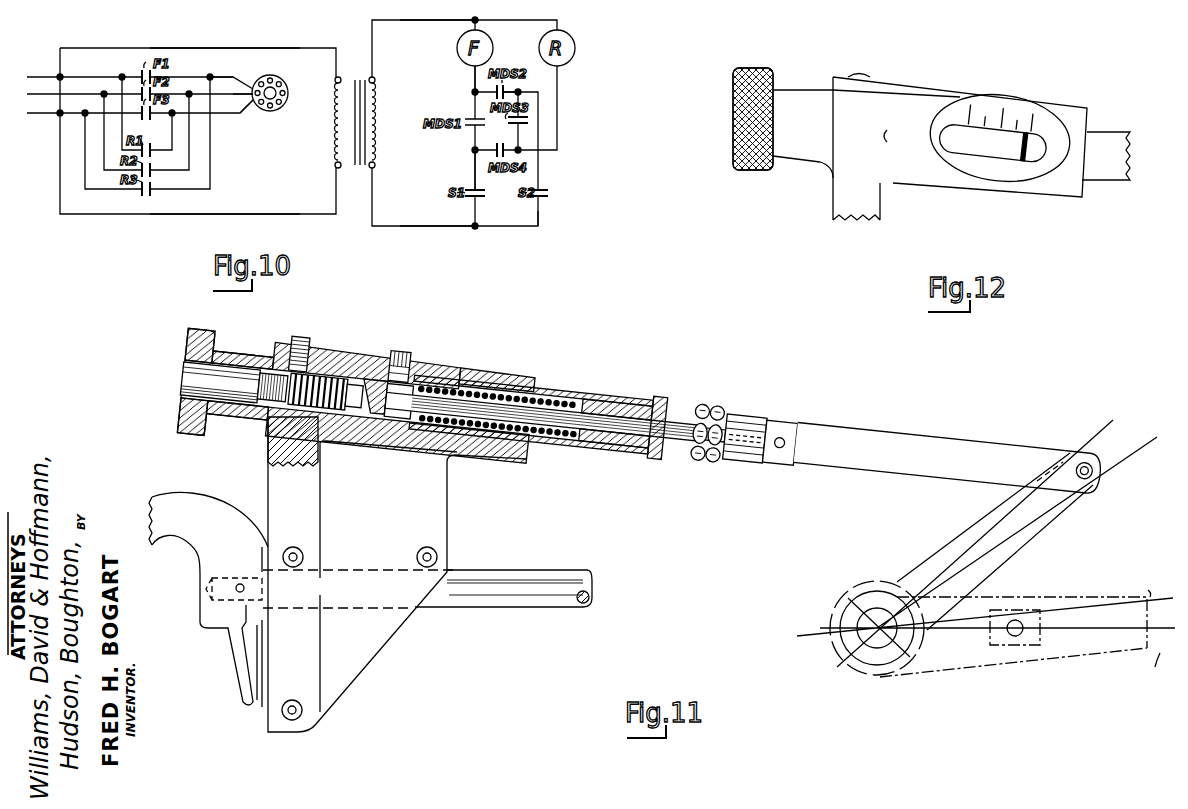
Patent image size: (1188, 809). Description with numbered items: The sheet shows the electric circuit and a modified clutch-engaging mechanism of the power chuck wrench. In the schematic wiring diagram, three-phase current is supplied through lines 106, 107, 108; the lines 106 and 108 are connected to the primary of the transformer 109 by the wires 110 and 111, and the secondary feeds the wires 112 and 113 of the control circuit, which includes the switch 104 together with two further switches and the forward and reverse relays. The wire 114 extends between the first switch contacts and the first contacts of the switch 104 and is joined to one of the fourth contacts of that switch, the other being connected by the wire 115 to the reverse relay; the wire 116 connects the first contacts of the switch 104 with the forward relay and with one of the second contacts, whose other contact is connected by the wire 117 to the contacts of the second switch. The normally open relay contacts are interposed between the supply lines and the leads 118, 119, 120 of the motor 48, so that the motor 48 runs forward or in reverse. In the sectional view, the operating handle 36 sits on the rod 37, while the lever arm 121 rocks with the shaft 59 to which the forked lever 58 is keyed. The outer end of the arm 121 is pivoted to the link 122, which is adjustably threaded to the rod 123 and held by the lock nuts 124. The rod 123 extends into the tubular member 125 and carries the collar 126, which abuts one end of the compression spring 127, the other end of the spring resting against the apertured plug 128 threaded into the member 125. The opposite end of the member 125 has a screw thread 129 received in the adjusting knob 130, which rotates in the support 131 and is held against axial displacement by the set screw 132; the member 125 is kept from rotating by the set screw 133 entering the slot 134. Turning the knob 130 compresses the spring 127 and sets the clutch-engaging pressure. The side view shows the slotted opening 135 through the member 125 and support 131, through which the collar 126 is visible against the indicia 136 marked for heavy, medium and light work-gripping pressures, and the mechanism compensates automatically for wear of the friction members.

In FIG. 10, the power supply line 106 is at (46, 77).
In FIG. 10, the power supply line 107 is at (51, 94).
In FIG. 10, the power supply line 108 is at (51, 114).
In FIG. 10, the wire 110 is at (318, 50).
In FIG. 10, the wire 111 is at (324, 215).
In FIG. 10, the motor lead 118 is at (230, 76).
In FIG. 10, the motor lead 119 is at (248, 95).
In FIG. 10, the motor lead 120 is at (228, 118).
In FIG. 10, the motor 48 is at (283, 117).
In FIG. 10, the transformer 109 is at (358, 70).
In FIG. 10, the control circuit wire 112 is at (447, 25).
In FIG. 10, the control circuit wire 113 is at (425, 220).
In FIG. 10, the wire 114 is at (472, 169).
In FIG. 10, the wire 115 is at (558, 109).
In FIG. 10, the wire 116 is at (471, 76).
In FIG. 10, the wire 117 is at (537, 90).
In FIG. 10, the switch 104 is at (469, 139).
In FIG. 12, the adjusting knob 130 is at (770, 68).
In FIG. 11, the adjusting knob 130 is at (242, 356).
In FIG. 11, the set screw 132 is at (297, 337).
In FIG. 11, the screw thread 129 is at (324, 358).
In FIG. 11, the set screw 133 is at (394, 350).
In FIG. 12, the collar or cylindrical flange 126 is at (1036, 156).
In FIG. 11, the collar or cylindrical flange 126 is at (436, 373).
In FIG. 11, the longitudinally extending slot or groove 134 is at (463, 378).
In FIG. 11, the compression spring 127 is at (543, 394).
In FIG. 11, the tubular member 125 is at (612, 396).
In FIG. 11, the apertured plug 128 is at (660, 405).
In FIG. 11, the lock nuts 124 is at (713, 403).
In FIG. 12, the rod or plunger member 123 is at (1109, 181).
In FIG. 11, the rod or plunger member 123 is at (656, 448).
In FIG. 11, the support 131 is at (440, 487).
In FIG. 11, the operating handle 36 is at (238, 516).
In FIG. 11, the rod 37 is at (540, 573).
In FIG. 11, the pull rod or link 122 is at (1015, 444).
In FIG. 11, the lever arm 121 is at (940, 546).
In FIG. 11, the forked lever 58 is at (1080, 594).
In FIG. 11, the shaft 59 is at (850, 658).
In FIG. 12, the indicia 136 is at (1012, 99).
In FIG. 12, the slot 135 is at (1008, 152).